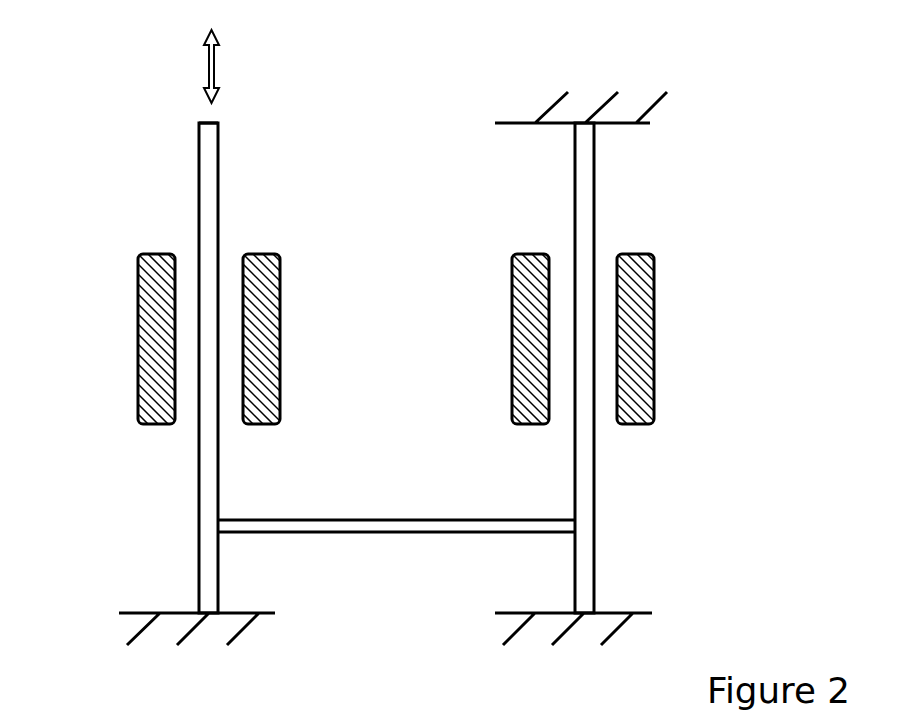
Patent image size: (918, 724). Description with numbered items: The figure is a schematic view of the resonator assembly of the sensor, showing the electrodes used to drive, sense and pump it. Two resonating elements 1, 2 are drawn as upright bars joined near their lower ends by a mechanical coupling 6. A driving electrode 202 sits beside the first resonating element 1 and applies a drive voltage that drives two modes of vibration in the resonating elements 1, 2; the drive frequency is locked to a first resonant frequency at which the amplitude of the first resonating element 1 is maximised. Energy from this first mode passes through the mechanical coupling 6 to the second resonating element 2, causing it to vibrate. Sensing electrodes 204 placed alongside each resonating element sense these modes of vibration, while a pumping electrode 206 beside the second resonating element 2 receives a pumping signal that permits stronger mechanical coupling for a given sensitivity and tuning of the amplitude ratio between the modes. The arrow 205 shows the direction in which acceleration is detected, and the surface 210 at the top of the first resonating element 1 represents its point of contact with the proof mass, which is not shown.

The first resonating element 1 is at (208, 170).
The second resonating element 2 is at (585, 182).
The mechanical coupling 6 is at (385, 527).
The driving electrode 202 is at (137, 305).
The sensing electrodes 204 is at (280, 302).
The arrow 205 is at (214, 65).
The pumping electrode 206 is at (655, 335).
The surface 210 is at (205, 121).